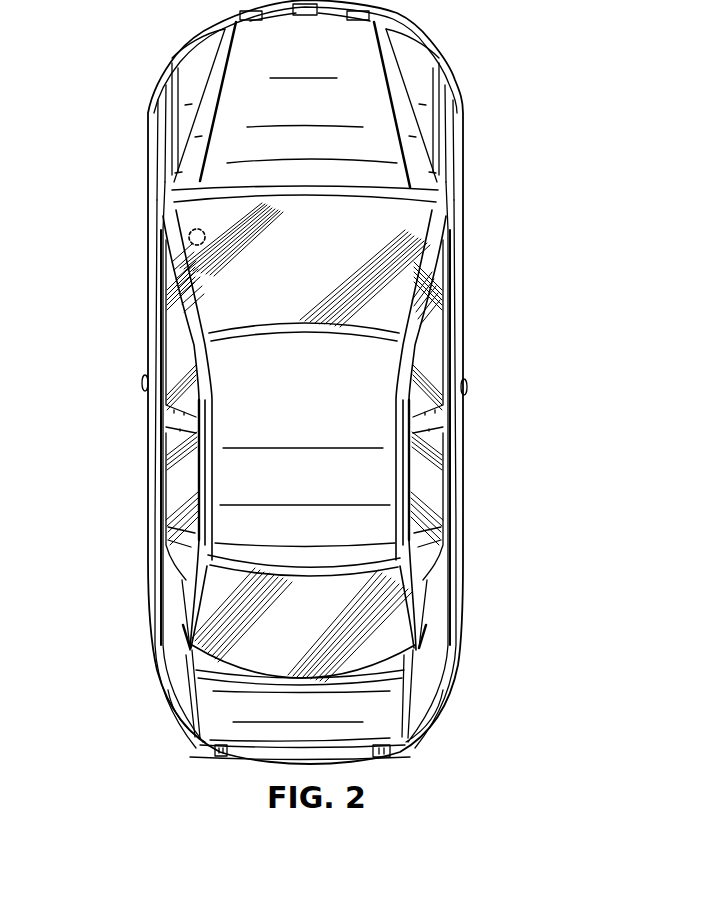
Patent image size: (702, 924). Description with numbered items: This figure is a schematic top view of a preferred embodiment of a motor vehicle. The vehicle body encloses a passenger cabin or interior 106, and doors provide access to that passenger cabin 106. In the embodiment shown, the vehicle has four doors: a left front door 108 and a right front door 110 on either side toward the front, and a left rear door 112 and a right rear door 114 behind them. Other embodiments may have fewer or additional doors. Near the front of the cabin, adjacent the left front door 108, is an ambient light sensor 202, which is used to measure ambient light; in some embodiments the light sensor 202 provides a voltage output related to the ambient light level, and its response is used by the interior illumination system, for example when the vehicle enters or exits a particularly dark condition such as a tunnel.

The passenger cabin 106 is at (318, 250).
The left front door 108 is at (148, 338).
The right front door 110 is at (457, 322).
The left rear door 112 is at (148, 472).
The right rear door 114 is at (457, 480).
The ambient light sensor 202 is at (188, 234).